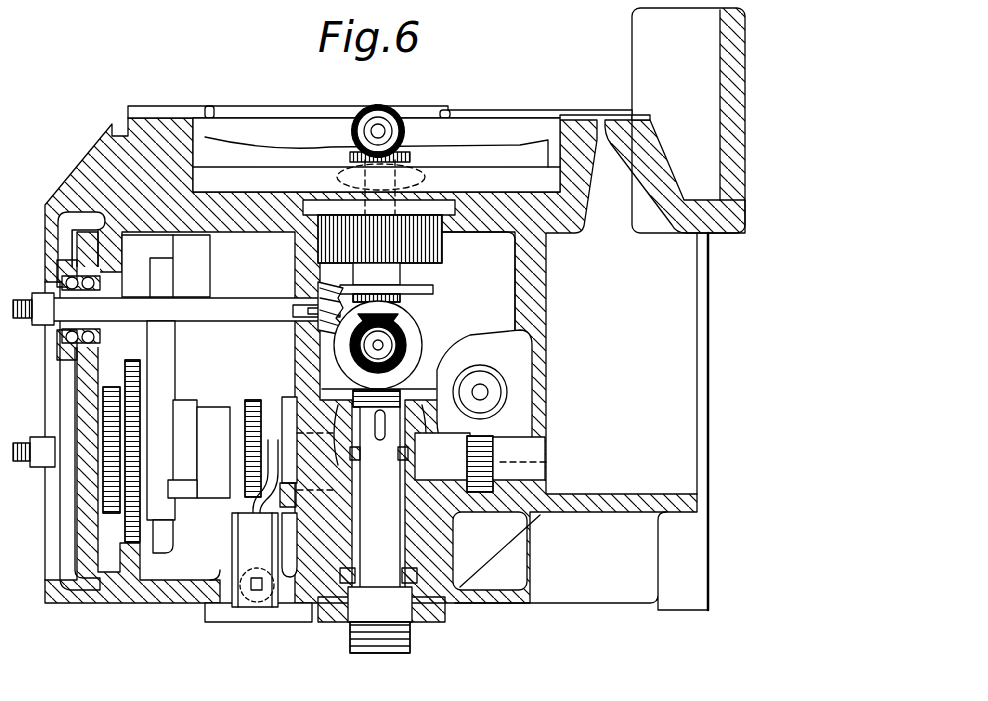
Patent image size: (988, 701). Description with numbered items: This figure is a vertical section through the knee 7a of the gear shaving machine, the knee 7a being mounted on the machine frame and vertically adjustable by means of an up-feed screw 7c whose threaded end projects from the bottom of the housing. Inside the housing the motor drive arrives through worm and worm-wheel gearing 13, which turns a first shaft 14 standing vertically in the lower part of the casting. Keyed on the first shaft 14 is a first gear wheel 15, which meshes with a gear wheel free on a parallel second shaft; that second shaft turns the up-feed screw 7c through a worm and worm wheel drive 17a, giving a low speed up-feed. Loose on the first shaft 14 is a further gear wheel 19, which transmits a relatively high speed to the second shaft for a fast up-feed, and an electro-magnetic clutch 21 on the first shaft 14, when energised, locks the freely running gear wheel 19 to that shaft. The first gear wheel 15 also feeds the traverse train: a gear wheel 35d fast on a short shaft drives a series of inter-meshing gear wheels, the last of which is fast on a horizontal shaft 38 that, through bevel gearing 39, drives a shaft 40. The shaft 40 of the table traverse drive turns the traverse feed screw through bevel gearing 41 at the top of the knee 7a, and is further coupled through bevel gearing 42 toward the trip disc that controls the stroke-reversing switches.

The knee 7a is at (148, 150).
The up-feed screw 7c is at (412, 645).
The worm and worm-wheel gearing 13 is at (537, 518).
The first shaft 14 is at (438, 497).
The first gear wheel 15 is at (253, 402).
The worm and worm wheel drive 17a is at (481, 462).
The further gear wheel 19 is at (142, 367).
The electro-magnetic clutch 21 is at (208, 414).
The gear wheel 35d is at (115, 514).
The shaft 38 is at (247, 311).
The bevel gearing 39 is at (340, 287).
The shaft 40 is at (440, 243).
The bevel gearing 41 is at (340, 157).
The bevel gearing 42 is at (400, 342).